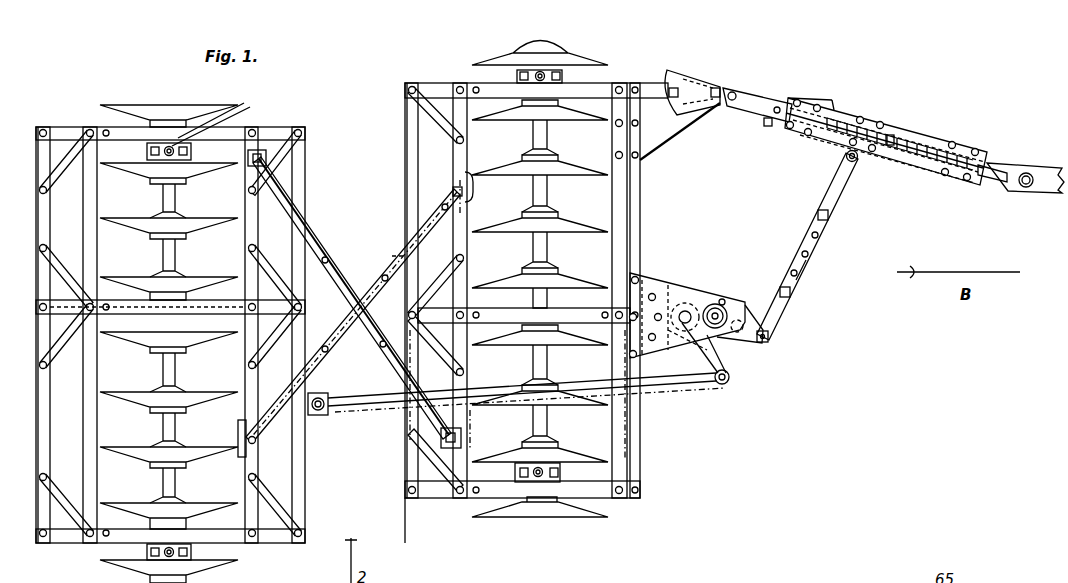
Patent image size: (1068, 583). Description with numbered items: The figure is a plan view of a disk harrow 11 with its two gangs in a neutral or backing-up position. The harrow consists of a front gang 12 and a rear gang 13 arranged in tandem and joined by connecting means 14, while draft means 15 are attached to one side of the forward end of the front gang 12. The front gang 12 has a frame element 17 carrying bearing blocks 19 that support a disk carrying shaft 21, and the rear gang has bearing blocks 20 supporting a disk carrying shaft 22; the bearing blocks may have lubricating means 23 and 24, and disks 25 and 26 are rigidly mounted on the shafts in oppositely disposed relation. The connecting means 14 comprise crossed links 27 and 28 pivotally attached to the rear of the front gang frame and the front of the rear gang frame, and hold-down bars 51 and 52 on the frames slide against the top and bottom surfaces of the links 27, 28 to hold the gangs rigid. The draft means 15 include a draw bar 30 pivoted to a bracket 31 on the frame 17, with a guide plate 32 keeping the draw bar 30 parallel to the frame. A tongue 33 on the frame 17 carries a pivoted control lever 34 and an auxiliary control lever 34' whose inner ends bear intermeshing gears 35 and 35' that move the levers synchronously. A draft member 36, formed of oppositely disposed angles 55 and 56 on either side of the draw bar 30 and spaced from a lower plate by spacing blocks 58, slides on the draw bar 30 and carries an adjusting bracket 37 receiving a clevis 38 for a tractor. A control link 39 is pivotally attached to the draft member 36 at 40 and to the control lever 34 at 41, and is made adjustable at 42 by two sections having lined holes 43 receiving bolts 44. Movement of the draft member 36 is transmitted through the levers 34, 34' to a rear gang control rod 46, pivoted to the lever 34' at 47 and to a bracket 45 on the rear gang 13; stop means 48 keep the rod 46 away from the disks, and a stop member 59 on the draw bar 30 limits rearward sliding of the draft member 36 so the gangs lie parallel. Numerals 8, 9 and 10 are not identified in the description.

The bolt 8 is at (770, 125).
The pin 9 is at (377, 432).
The cross pin 10 is at (392, 256).
The disk harrow 11 is at (398, 543).
The front gang 12 is at (233, 538).
The rear gang 13 is at (270, 548).
The connecting means 14 is at (355, 345).
The draft means 15 is at (995, 146).
The frame element 17 is at (600, 490).
The bearing block 19 is at (564, 76).
The bearing block 20 is at (146, 153).
The disk carrying shaft 21 is at (541, 140).
The disk carrying shaft 22 is at (172, 200).
The lubricating means 23 is at (538, 76).
The lubricating means 24 is at (219, 324).
The disk 25 is at (598, 62).
The disk 26 is at (135, 104).
The connecting link 27 is at (328, 268).
The connecting link 28 is at (325, 340).
The draw bar 30 is at (737, 110).
The bracket 31 is at (678, 124).
The guide plate 32 is at (700, 108).
The tongue 33 is at (690, 278).
The control lever 34 is at (742, 338).
The auxiliary control lever 34' is at (731, 357).
The gear 35 is at (724, 304).
The gear 35' is at (684, 337).
The draft member 36 is at (925, 170).
The adjusting bracket 37 is at (990, 178).
The clevis 38 is at (1012, 184).
The control link 39 is at (836, 178).
The pivotal attachment 40 is at (846, 155).
The pivotal attachment 41 is at (772, 337).
The adjustment 42 is at (820, 264).
The lined holes 43 is at (820, 235).
The bolt 44 is at (817, 214).
The bracket 45 is at (318, 418).
The rear gang control rod 46 is at (350, 410).
The pivotal attachment 47 is at (733, 383).
The stop means 48 is at (412, 352).
The hold-down bar 51 is at (405, 145).
The hold-down bar 52 is at (306, 163).
The angle 55 is at (920, 132).
The angle 56 is at (905, 160).
The spacing block 58 is at (835, 108).
The stop member 59 is at (768, 104).